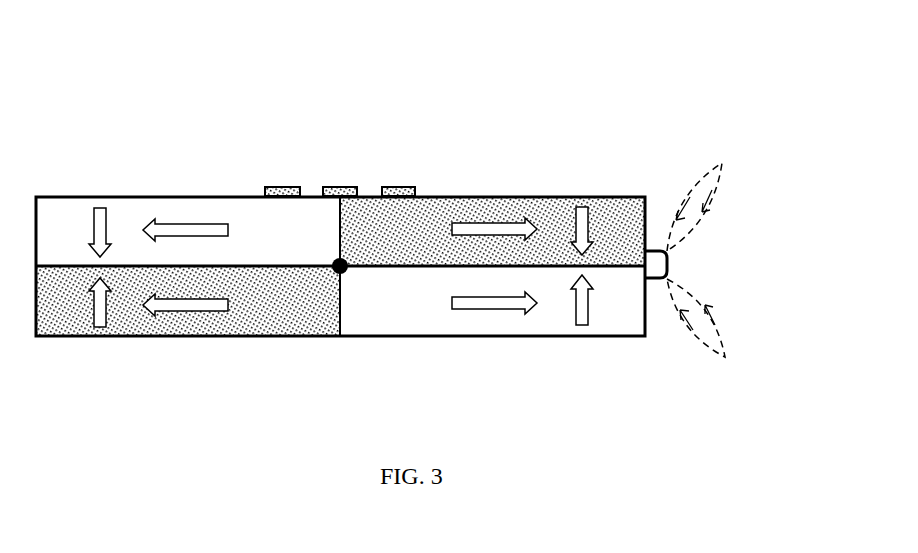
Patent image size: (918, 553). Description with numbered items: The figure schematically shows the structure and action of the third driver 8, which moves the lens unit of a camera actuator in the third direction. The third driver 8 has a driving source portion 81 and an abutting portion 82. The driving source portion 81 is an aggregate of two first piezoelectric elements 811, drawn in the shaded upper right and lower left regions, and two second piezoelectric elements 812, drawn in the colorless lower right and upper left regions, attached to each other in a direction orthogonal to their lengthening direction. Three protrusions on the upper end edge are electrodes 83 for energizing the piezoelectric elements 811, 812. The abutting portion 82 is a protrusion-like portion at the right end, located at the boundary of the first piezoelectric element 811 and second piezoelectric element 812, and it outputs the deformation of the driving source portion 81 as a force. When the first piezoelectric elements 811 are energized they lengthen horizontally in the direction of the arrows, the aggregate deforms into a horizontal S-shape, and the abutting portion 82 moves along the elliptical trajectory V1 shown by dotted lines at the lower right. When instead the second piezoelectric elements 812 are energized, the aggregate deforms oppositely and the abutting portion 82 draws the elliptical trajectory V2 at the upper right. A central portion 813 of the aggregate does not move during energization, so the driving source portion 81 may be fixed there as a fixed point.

The third driver 8 is at (104, 72).
The driving source portion 81 is at (549, 195).
The first piezoelectric element 811 is at (450, 195).
The second piezoelectric element 812 is at (133, 196).
The central portion 813 is at (343, 271).
The abutting portion 82 is at (669, 262).
The electrodes 83 is at (392, 185).
The elliptical trajectory V1 is at (713, 362).
The elliptical trajectory V2 is at (716, 162).